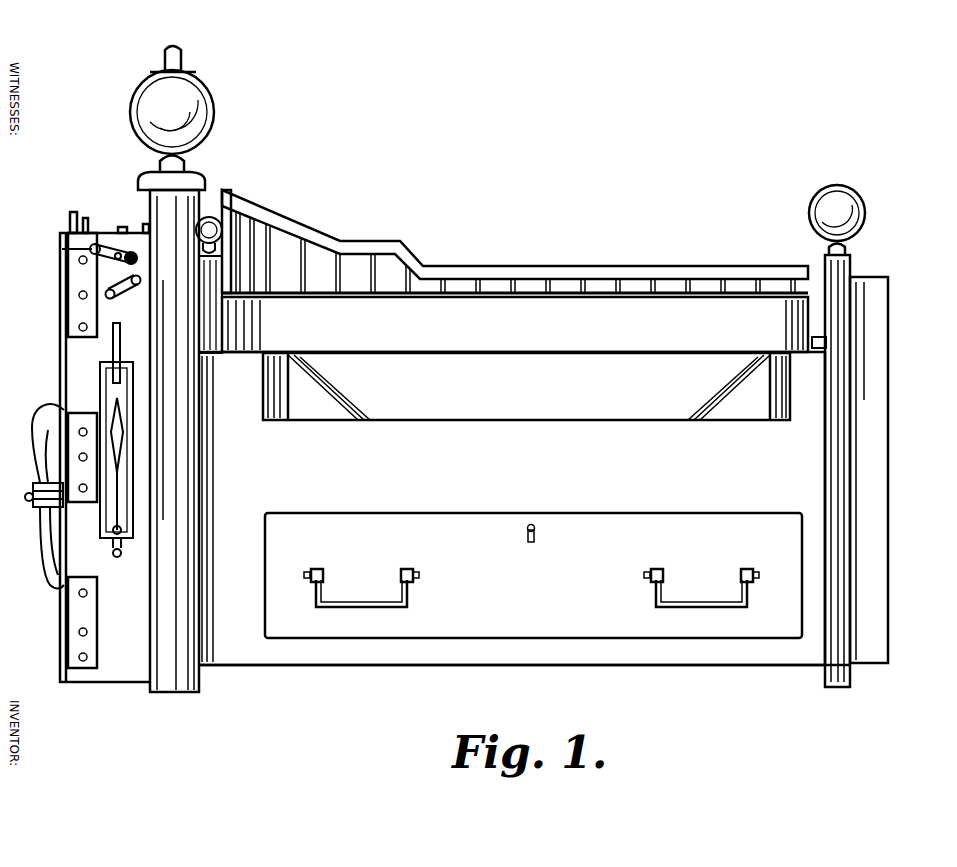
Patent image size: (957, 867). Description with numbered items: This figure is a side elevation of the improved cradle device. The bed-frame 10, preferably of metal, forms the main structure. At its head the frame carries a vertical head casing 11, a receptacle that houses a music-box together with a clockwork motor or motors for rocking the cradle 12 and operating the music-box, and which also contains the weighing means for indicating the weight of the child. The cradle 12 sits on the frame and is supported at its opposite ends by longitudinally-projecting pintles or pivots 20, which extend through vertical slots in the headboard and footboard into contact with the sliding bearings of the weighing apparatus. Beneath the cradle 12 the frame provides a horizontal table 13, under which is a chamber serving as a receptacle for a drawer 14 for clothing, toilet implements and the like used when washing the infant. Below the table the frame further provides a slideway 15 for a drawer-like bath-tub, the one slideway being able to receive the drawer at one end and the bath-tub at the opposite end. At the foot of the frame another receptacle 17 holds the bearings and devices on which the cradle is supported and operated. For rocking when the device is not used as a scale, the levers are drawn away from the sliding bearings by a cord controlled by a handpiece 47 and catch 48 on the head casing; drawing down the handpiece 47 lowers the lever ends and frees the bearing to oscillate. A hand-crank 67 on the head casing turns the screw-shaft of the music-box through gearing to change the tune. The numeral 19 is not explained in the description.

The bed-frame 10 is at (512, 508).
The head casing 11 is at (105, 447).
The cradle 12 is at (515, 271).
The horizontal table 13 is at (489, 420).
The drawer 14 is at (533, 575).
The slideway 15 is at (265, 640).
The foot receptacle 17 is at (870, 470).
The lever 19 is at (103, 282).
The pintles 20 is at (818, 336).
The handpiece 47 is at (113, 547).
The catch 48 is at (121, 474).
The hand-crank 67 is at (141, 288).